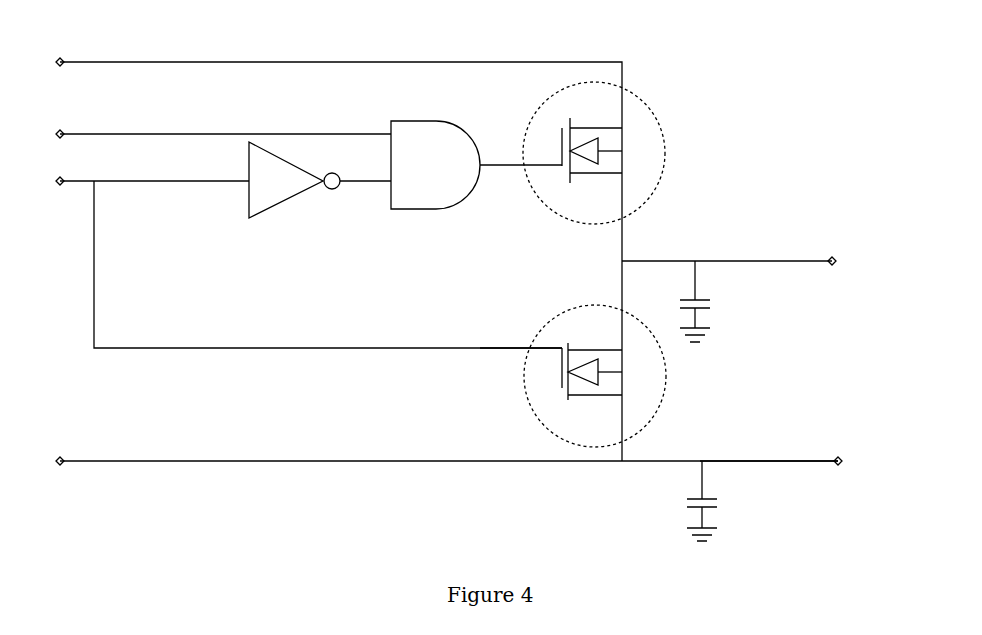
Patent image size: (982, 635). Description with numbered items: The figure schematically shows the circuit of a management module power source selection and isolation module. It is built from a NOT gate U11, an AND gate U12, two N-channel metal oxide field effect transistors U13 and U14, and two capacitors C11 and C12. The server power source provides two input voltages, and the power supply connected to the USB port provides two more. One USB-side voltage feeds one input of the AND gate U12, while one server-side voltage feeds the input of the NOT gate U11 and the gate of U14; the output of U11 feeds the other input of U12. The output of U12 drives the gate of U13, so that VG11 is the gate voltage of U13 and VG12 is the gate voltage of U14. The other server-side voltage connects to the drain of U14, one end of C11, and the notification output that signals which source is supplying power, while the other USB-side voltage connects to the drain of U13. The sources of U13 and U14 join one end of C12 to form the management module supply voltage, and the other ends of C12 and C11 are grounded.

The NOT gate U11 is at (320, 180).
The AND gate U12 is at (435, 165).
The N-channel metal oxide field effect transistor U13 is at (594, 153).
The N-channel metal oxide field effect transistor U14 is at (595, 376).
The capacitor C11 is at (728, 501).
The capacitor C12 is at (719, 301).
The gate voltage of U13 VG11 is at (514, 143).
The gate voltage of U14 VG12 is at (512, 370).